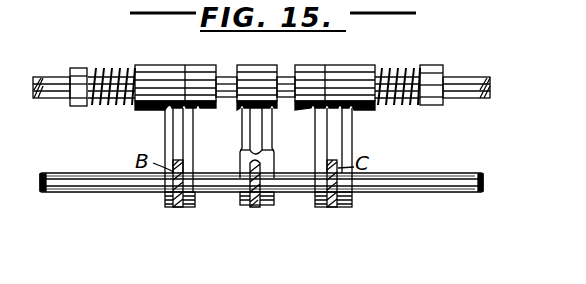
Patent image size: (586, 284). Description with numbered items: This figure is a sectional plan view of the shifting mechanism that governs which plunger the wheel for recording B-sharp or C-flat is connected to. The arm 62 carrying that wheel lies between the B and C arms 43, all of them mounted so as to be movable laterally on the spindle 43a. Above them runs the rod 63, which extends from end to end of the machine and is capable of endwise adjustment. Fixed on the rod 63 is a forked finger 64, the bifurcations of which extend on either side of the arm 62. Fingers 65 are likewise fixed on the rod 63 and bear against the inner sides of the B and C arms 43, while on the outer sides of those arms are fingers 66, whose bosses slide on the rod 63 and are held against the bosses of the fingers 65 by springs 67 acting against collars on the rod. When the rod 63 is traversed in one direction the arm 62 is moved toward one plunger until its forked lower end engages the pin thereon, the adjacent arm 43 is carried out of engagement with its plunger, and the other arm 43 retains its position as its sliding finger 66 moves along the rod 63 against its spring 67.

The arm 43 is at (178, 208).
The spindle 43a is at (396, 192).
The arm 62 is at (255, 208).
The rod 63 is at (55, 78).
The forked finger 64 is at (247, 143).
The finger 65 is at (190, 151).
The finger 66 is at (166, 138).
The spring 67 is at (124, 68).